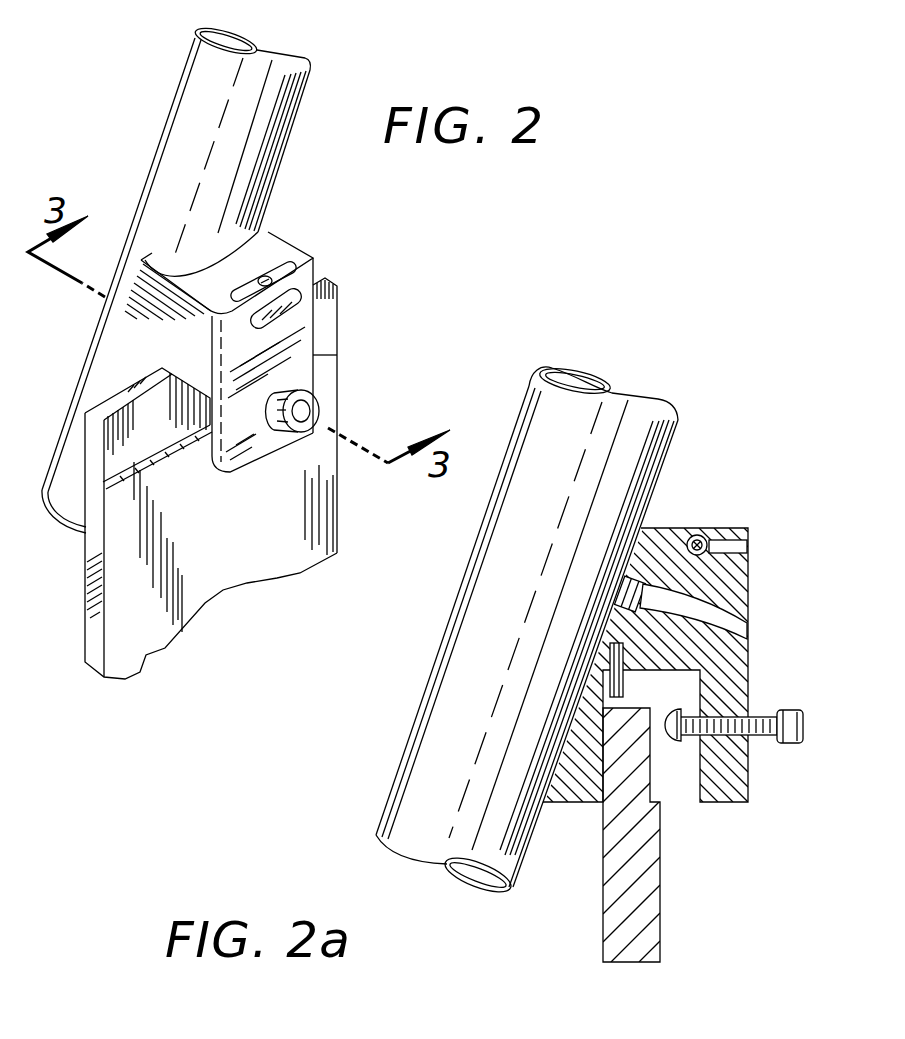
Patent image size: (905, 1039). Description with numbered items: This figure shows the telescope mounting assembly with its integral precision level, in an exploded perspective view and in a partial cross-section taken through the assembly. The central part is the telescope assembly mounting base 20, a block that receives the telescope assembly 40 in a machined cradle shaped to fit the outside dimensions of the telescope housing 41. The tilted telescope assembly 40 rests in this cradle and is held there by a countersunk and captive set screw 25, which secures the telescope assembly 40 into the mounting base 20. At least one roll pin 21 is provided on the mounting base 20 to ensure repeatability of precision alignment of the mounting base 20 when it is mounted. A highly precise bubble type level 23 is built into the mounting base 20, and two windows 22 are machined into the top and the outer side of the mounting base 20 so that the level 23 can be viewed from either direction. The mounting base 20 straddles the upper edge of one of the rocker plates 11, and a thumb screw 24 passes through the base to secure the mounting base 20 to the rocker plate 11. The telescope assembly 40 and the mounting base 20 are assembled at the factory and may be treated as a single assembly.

In FIG. 2, the rocker plate 11 is at (217, 573).
In FIG. 2a, the rocker plate 11 is at (653, 887).
In FIG. 2, the telescope assembly mounting base 20 is at (313, 353).
In FIG. 2a, the telescope assembly mounting base 20 is at (735, 695).
In FIG. 2a, the roll pin 21 is at (694, 537).
In FIG. 2, the window 22 is at (294, 314).
In FIG. 2, the bubble type level 23 is at (293, 258).
In FIG. 2a, the bubble type level 23 is at (708, 536).
In FIG. 2, the thumb screw 24 is at (308, 413).
In FIG. 2a, the thumb screw 24 is at (803, 727).
In FIG. 2a, the set screw 25 is at (747, 631).
In FIG. 2, the telescope assembly 40 is at (88, 380).
In FIG. 2a, the telescope assembly 40 is at (447, 653).
In FIG. 2, the telescope housing 41 is at (200, 93).
In FIG. 2a, the telescope housing 41 is at (520, 560).